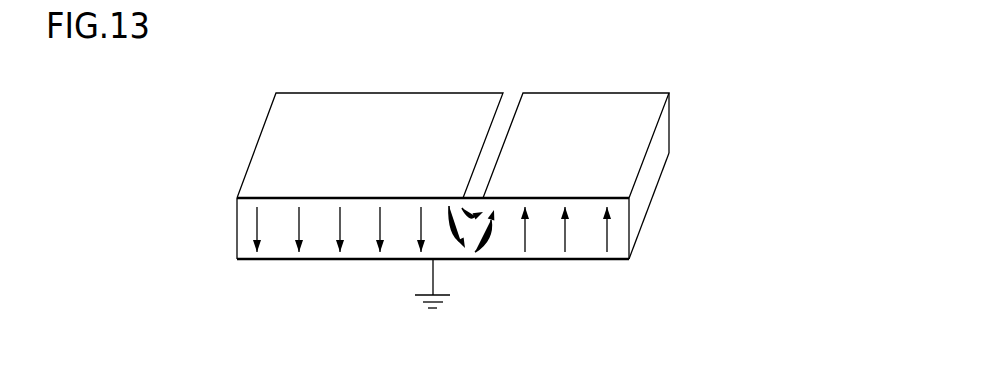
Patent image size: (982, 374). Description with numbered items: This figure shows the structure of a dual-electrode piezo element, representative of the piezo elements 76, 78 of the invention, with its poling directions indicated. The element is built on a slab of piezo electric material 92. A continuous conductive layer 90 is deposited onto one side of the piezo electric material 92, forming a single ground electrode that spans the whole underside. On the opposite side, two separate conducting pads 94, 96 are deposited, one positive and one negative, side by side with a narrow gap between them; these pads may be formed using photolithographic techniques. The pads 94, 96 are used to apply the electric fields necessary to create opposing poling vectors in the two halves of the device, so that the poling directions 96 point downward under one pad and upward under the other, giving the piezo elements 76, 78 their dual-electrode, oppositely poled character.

The piezo element 76 is at (450, 187).
The piezo element 78 is at (450, 187).
The continuous conductive layer 90 is at (575, 260).
The piezo electric material 92 is at (648, 193).
The conducting pad 94 is at (367, 145).
The conducting pad / poling direction 96 is at (187, 250).